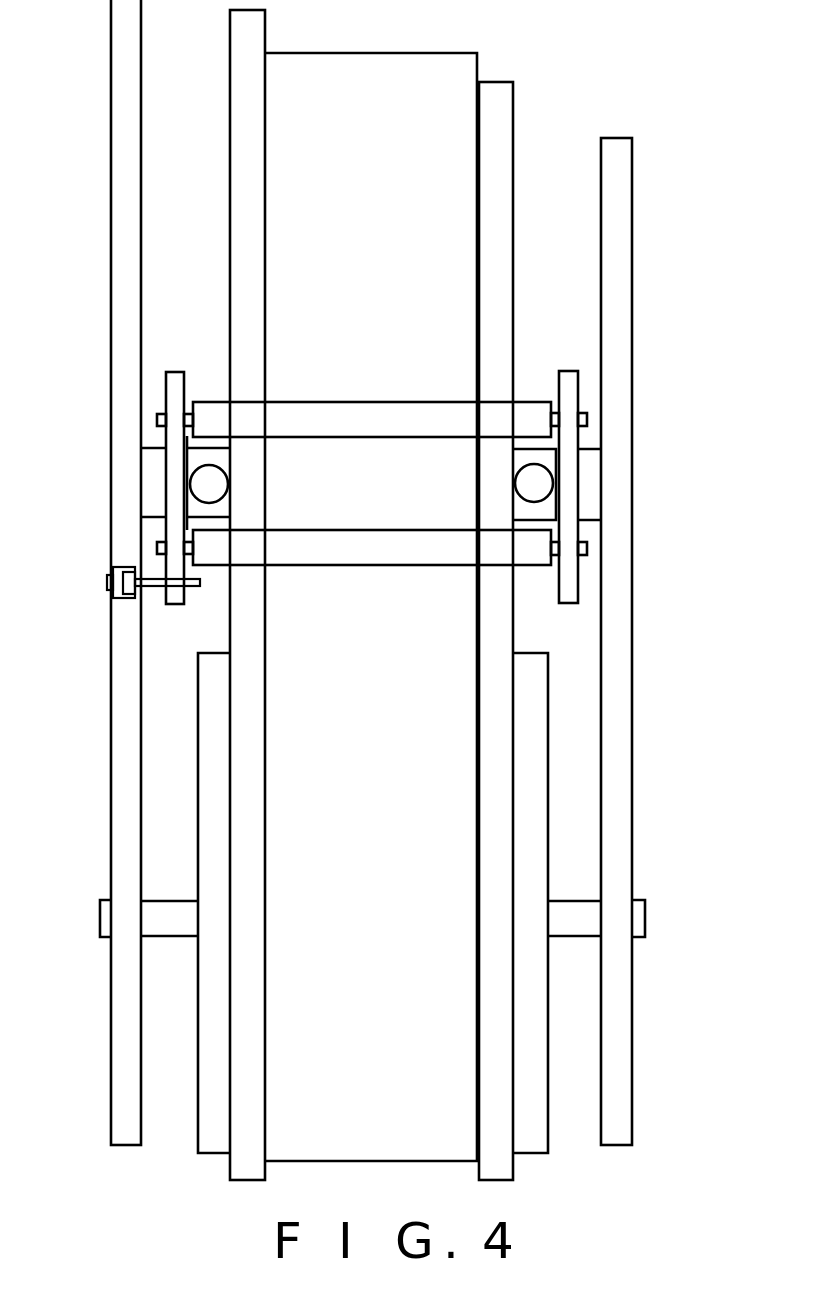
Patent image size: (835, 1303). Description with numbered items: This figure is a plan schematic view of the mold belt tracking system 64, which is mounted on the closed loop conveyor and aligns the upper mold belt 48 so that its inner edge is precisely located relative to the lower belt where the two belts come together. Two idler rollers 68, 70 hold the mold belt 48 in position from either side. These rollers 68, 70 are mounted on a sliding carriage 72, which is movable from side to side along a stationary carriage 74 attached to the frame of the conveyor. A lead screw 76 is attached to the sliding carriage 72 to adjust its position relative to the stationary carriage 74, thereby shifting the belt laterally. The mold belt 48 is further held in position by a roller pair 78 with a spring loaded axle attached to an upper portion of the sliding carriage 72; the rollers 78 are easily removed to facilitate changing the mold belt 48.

The mold belt tracking system 64 is at (600, 75).
The upper mold belt 48 is at (513, 632).
The first roller pair 78 is at (527, 402).
The sliding carriage 72 is at (579, 397).
The stationary carriage 74 is at (587, 518).
The idler roller 68 is at (193, 473).
The idler roller 70 is at (548, 473).
The lead screw 76 is at (157, 583).